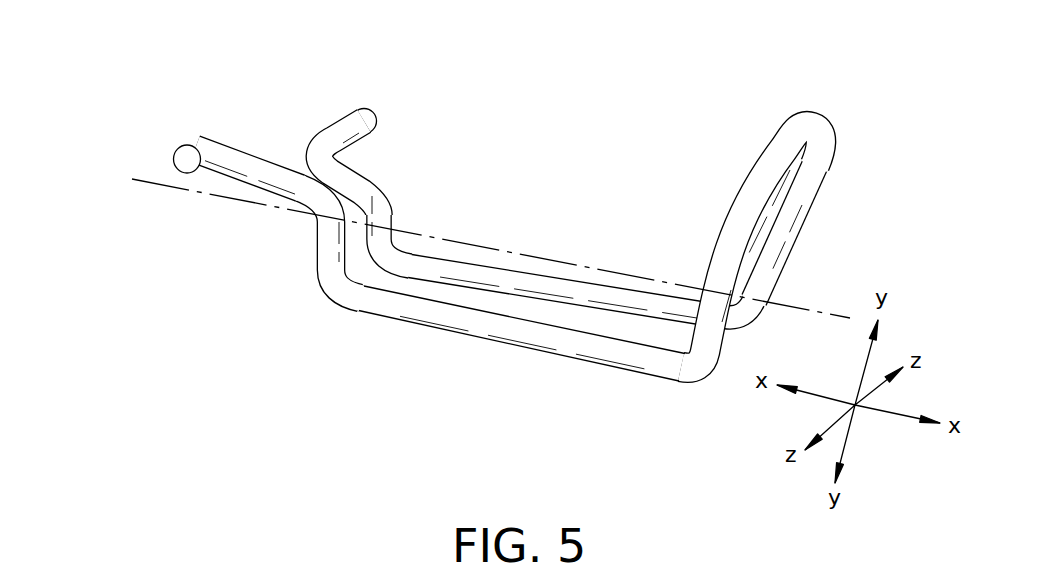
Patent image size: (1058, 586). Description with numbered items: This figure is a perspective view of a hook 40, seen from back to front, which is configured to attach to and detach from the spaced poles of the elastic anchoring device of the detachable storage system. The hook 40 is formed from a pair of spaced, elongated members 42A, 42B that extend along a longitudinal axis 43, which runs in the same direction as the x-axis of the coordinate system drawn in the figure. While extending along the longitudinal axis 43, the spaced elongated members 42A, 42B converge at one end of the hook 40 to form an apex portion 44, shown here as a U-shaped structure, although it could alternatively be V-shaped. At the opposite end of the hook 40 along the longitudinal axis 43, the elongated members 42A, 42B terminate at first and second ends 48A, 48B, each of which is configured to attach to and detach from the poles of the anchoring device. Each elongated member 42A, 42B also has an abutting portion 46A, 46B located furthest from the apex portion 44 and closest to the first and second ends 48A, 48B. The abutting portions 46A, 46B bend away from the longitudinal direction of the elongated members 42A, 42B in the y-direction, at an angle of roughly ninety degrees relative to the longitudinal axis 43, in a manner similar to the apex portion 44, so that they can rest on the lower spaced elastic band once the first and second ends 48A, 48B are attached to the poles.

The hook 40 is at (512, 234).
The spaced, elongated member 42A is at (565, 357).
The spaced, elongated member 42B is at (568, 280).
The longitudinal axis 43 is at (152, 185).
The apex portion 44 is at (812, 116).
The abutting portion 46A is at (317, 250).
The abutting portion 46B is at (384, 173).
The first end 48A is at (198, 172).
The second end 48B is at (340, 128).